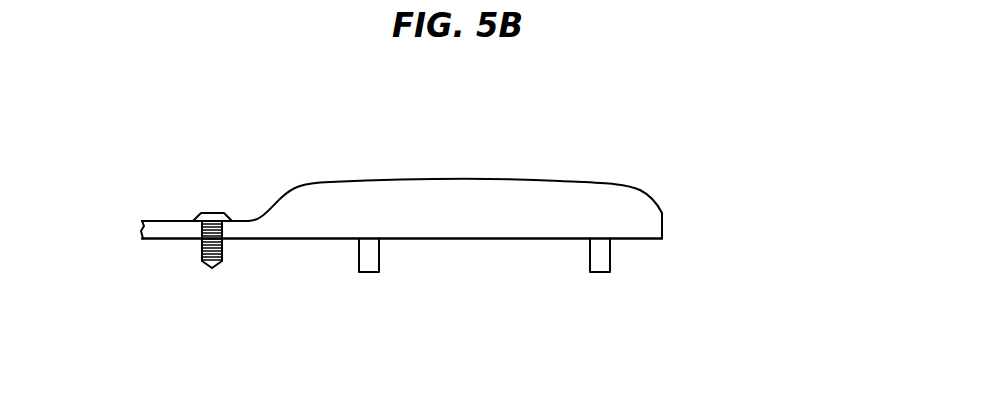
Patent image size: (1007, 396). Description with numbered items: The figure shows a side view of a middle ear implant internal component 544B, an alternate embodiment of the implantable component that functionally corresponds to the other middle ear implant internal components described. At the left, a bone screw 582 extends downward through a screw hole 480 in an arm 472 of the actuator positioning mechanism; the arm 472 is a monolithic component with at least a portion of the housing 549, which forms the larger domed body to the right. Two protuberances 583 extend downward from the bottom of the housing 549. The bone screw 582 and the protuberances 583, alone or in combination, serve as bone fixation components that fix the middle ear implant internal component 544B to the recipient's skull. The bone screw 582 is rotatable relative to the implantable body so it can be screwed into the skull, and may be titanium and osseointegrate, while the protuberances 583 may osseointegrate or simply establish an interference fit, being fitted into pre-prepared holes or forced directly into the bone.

The middle ear implant internal component 544B is at (600, 104).
The arm 472 is at (163, 231).
The housing 549 is at (645, 217).
The bone screw 582 is at (197, 216).
The screw hole 480 is at (222, 228).
The protuberance 583 is at (376, 259).